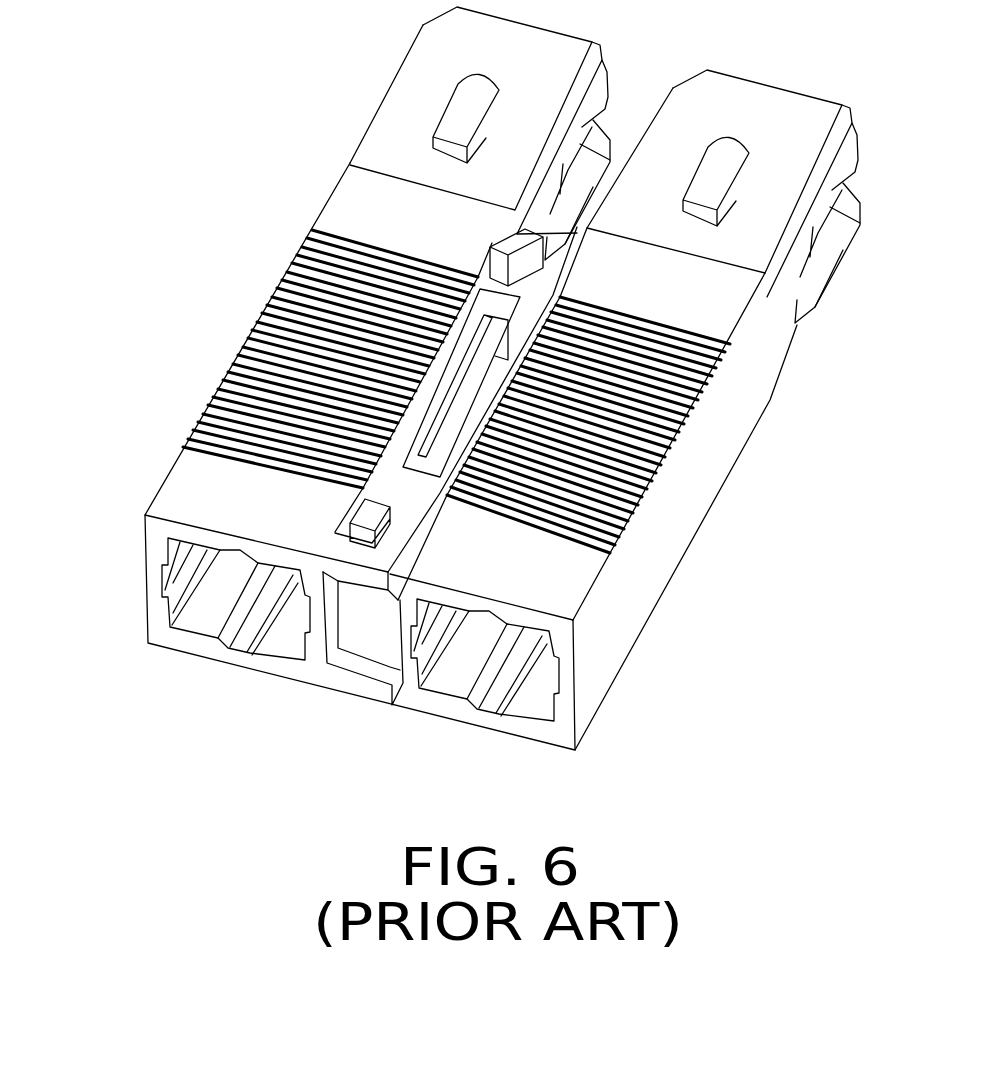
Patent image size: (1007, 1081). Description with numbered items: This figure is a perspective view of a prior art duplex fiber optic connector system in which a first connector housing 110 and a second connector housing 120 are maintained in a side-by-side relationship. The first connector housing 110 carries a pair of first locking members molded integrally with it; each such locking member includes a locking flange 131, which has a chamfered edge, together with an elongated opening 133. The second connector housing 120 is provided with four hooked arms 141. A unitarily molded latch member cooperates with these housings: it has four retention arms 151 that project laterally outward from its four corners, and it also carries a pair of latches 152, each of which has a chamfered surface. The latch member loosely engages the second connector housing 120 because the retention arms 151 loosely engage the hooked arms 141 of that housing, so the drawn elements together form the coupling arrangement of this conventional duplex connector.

The first connector housing 110 is at (638, 572).
The second connector housing 120 is at (195, 500).
The locking flange 131 is at (425, 385).
The elongated opening 133 is at (683, 405).
The hooked arm 141 is at (543, 268).
The retention arm 151 is at (503, 263).
The latch 152 is at (440, 445).